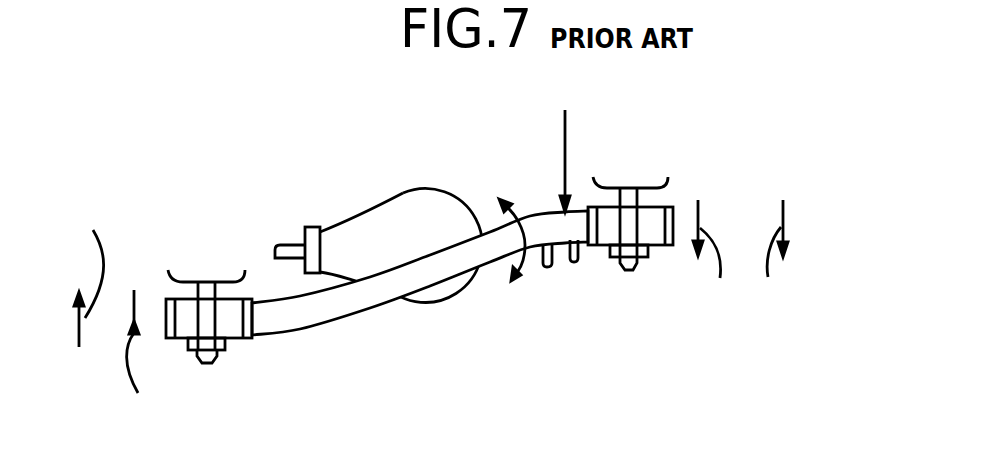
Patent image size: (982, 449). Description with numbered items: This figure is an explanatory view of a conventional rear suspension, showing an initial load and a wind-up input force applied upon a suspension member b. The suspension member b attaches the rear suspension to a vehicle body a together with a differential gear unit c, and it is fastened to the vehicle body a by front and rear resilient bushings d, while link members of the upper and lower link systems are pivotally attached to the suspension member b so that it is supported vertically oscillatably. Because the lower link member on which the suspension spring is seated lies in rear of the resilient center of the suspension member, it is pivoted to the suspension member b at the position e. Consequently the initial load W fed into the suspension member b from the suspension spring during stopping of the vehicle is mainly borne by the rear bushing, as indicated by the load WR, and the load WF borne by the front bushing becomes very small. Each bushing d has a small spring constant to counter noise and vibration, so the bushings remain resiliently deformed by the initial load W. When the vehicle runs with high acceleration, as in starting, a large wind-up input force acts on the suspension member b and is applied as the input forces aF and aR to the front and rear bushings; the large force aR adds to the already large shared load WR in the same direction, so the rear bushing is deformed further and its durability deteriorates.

The vehicle body a is at (171, 276).
The suspension member b is at (350, 303).
The differential gear unit c is at (440, 192).
The resilient bushings d is at (180, 347).
The pivot position of rearward lower link member e is at (558, 252).
The initial load W is at (565, 140).
The initial load borne by front bushing WF is at (152, 400).
The initial load borne by rear bushing WR is at (728, 284).
The wind-up input force on front bushing aF is at (93, 275).
The wind-up input force on rear bushing aR is at (787, 252).